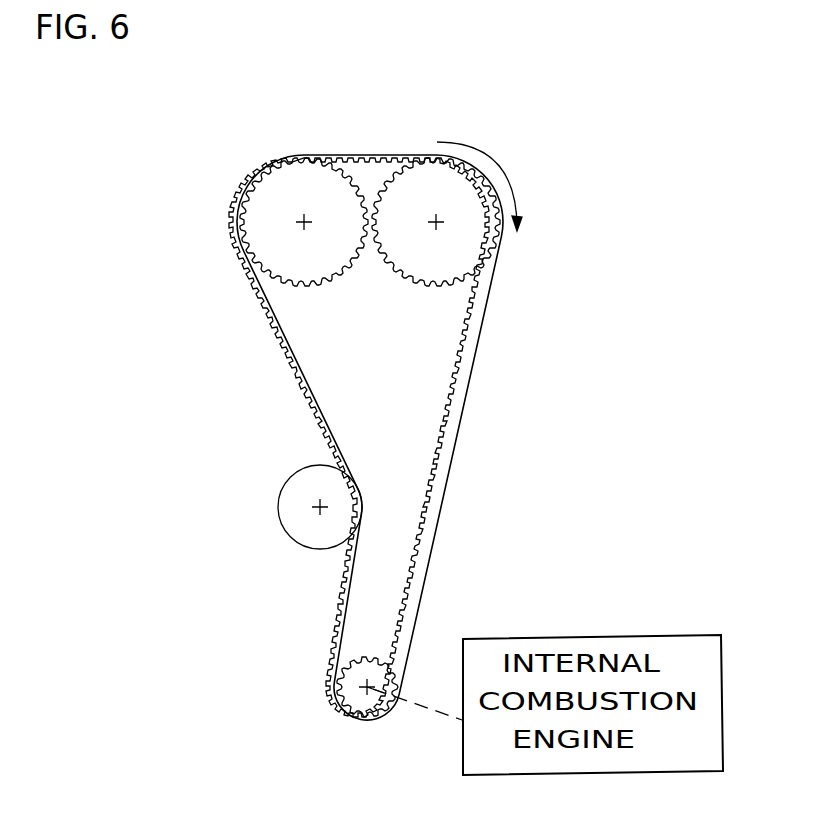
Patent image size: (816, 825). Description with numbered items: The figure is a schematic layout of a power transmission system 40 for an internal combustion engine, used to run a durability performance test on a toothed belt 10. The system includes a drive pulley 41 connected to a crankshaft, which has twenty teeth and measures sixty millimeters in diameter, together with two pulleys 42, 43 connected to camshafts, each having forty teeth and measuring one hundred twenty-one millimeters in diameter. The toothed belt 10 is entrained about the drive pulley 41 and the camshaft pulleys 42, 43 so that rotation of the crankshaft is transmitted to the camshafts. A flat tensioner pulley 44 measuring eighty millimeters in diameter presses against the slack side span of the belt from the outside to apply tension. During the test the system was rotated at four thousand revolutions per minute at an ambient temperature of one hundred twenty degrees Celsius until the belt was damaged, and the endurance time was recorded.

The toothed belt 10 is at (387, 155).
The power transmission system 40 is at (245, 405).
The drive pulley 41 is at (366, 703).
The pulley 42 is at (461, 253).
The pulley 43 is at (264, 254).
The flat tensioner pulley 44 is at (295, 519).